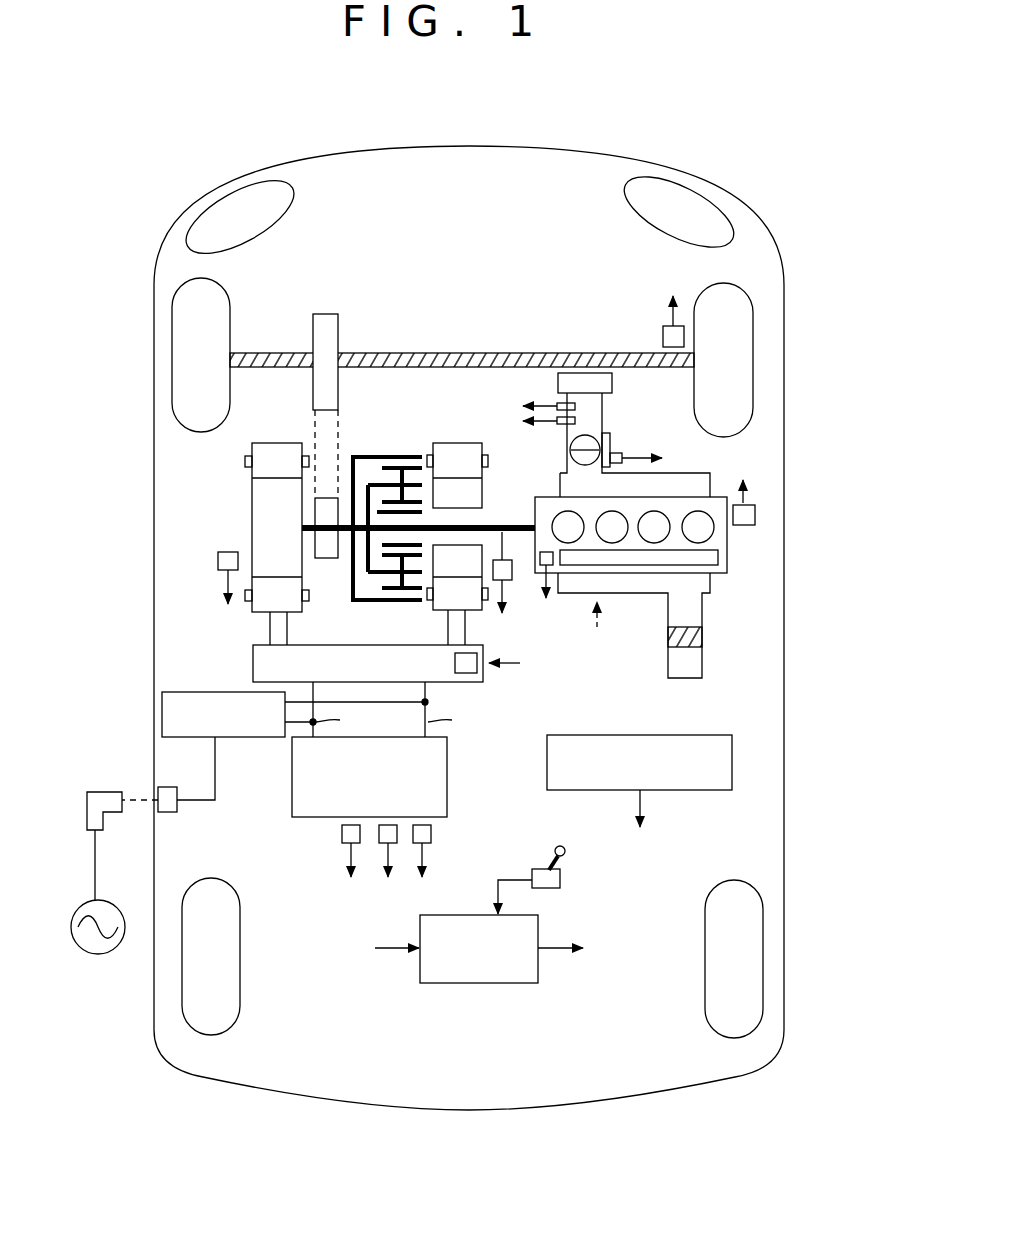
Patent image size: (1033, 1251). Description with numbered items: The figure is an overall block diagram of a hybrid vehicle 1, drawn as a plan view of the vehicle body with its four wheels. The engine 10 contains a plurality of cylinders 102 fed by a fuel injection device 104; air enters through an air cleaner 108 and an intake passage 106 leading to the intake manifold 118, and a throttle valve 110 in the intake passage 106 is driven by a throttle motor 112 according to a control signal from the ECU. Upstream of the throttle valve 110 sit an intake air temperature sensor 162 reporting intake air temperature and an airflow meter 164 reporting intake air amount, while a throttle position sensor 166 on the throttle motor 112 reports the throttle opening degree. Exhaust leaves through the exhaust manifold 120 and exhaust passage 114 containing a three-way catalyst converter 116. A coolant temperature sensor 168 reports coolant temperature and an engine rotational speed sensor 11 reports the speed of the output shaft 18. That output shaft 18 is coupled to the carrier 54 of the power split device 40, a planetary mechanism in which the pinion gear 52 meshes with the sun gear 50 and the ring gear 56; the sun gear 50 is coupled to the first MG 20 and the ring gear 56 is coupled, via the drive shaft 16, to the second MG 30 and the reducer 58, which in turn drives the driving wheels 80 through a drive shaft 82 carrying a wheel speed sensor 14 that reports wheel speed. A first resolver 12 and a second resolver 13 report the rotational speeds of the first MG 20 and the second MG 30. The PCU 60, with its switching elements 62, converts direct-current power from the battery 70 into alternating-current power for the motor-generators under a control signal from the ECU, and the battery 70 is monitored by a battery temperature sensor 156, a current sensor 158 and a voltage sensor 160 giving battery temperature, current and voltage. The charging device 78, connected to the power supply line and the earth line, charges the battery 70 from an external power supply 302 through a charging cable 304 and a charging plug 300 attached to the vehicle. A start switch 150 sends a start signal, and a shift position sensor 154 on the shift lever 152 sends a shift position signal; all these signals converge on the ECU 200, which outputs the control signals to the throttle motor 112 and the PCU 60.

The hybrid vehicle 1 is at (469, 597).
The engine 10 is at (742, 558).
The engine rotational speed sensor 11 is at (755, 513).
The first resolver 12 is at (532, 527).
The second resolver 13 is at (228, 552).
The wheel speed sensor 14 is at (663, 338).
The drive shaft 16 is at (348, 535).
The output shaft 18 is at (541, 497).
The first motor-generator 20 is at (453, 443).
The second motor-generator 30 is at (272, 443).
The power split device 40 is at (438, 512).
The sun gear 50 is at (408, 543).
The pinion gear 52 is at (408, 590).
The carrier 54 is at (372, 602).
The ring gear 56 is at (377, 457).
The reducer 58 is at (321, 314).
The power control unit 60 is at (372, 691).
The switching elements 62 is at (470, 676).
The battery 70 is at (292, 775).
The charging device 78 is at (162, 712).
The driving wheels 80 is at (706, 290).
The drive shaft 82 is at (580, 352).
The cylinders 102 is at (718, 533).
The fuel injection device 104 is at (723, 563).
The intake passage 106 is at (612, 374).
The air cleaner 108 is at (558, 383).
The throttle valve 110 is at (570, 446).
The throttle motor 112 is at (612, 443).
The exhaust passage 114 is at (702, 610).
The three-way catalyst converter 116 is at (702, 635).
The intake manifold 118 is at (707, 468).
The exhaust manifold 120 is at (637, 593).
The start switch 150 is at (685, 735).
The shift lever 152 is at (560, 846).
The shift position sensor 154 is at (560, 880).
The battery temperature sensor 156 is at (342, 835).
The current sensor 158 is at (393, 817).
The voltage sensor 160 is at (431, 835).
The intake air temperature sensor 162 is at (602, 406).
The airflow meter 164 is at (602, 421).
The throttle position sensor 166 is at (622, 468).
The coolant temperature sensor 168 is at (558, 574).
The electronic control unit 200 is at (477, 983).
The charging plug 300 is at (102, 792).
The external power supply 302 is at (96, 900).
The charging cable 304 is at (96, 848).